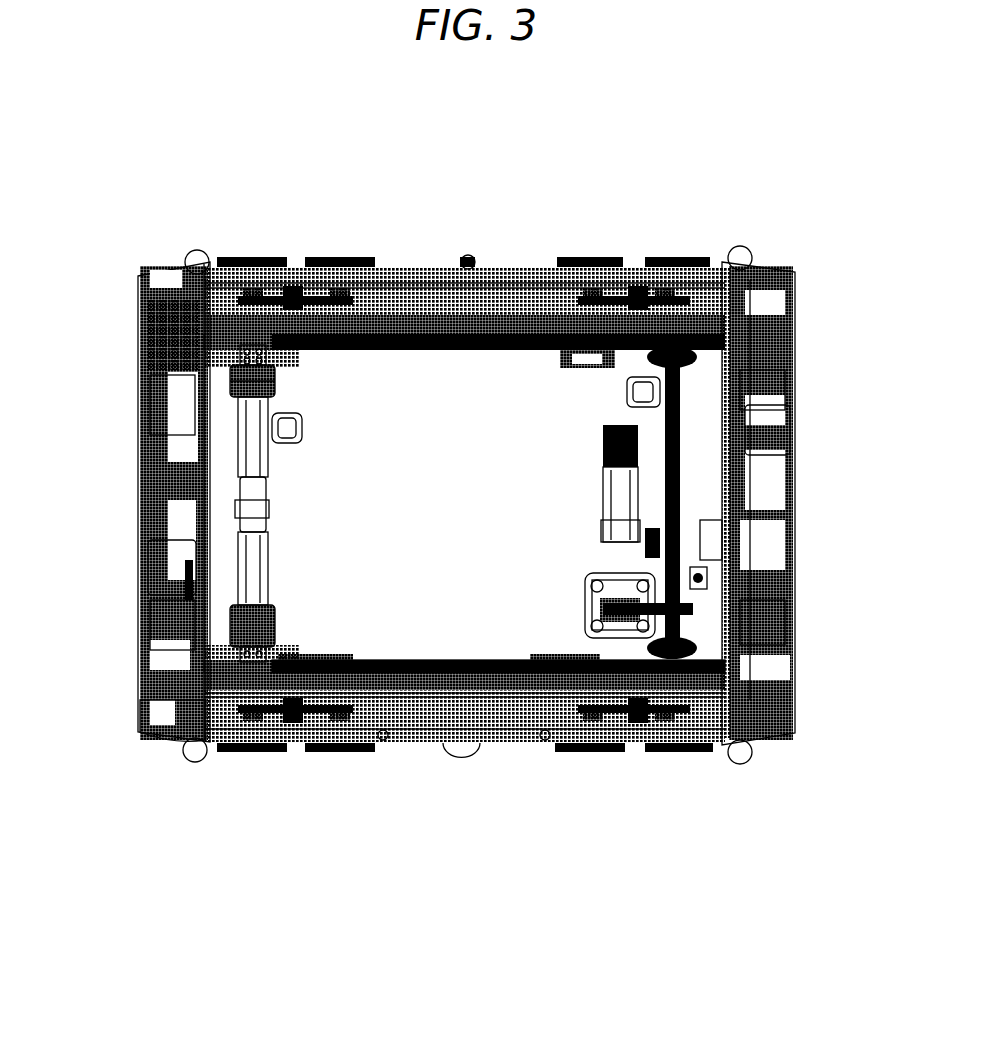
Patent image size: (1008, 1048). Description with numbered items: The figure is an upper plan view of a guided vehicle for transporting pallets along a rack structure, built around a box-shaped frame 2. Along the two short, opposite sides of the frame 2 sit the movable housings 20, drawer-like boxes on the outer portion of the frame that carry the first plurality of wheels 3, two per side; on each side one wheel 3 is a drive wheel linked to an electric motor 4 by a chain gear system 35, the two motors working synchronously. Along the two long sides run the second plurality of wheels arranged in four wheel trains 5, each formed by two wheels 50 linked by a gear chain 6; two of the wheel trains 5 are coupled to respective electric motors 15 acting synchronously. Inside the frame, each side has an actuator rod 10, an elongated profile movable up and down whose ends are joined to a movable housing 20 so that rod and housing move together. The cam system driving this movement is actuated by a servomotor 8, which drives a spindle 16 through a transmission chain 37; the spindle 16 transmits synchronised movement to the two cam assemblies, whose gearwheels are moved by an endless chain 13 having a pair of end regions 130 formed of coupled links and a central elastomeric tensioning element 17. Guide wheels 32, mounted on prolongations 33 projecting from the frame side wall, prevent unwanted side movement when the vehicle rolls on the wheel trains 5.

The box-shaped frame 2 is at (706, 537).
The wheels 3 is at (165, 388).
The electric motor 4 is at (155, 565).
The wheel trains 5 is at (298, 246).
The gear chain 6 is at (288, 300).
The servomotor 8 is at (614, 498).
The actuator rod 10 is at (483, 322).
The endless chain 13 is at (442, 680).
The electric motors 15 is at (245, 585).
The spindle 16 is at (680, 488).
The tensioning element 17 is at (462, 335).
The movable housings 20 is at (148, 268).
The guide wheels 32 is at (193, 262).
The prolongation 33 is at (190, 718).
The chain gear system 35 is at (190, 588).
The transmission chain 37 is at (680, 627).
The wheels 50 is at (346, 257).
The end regions 130 is at (577, 357).